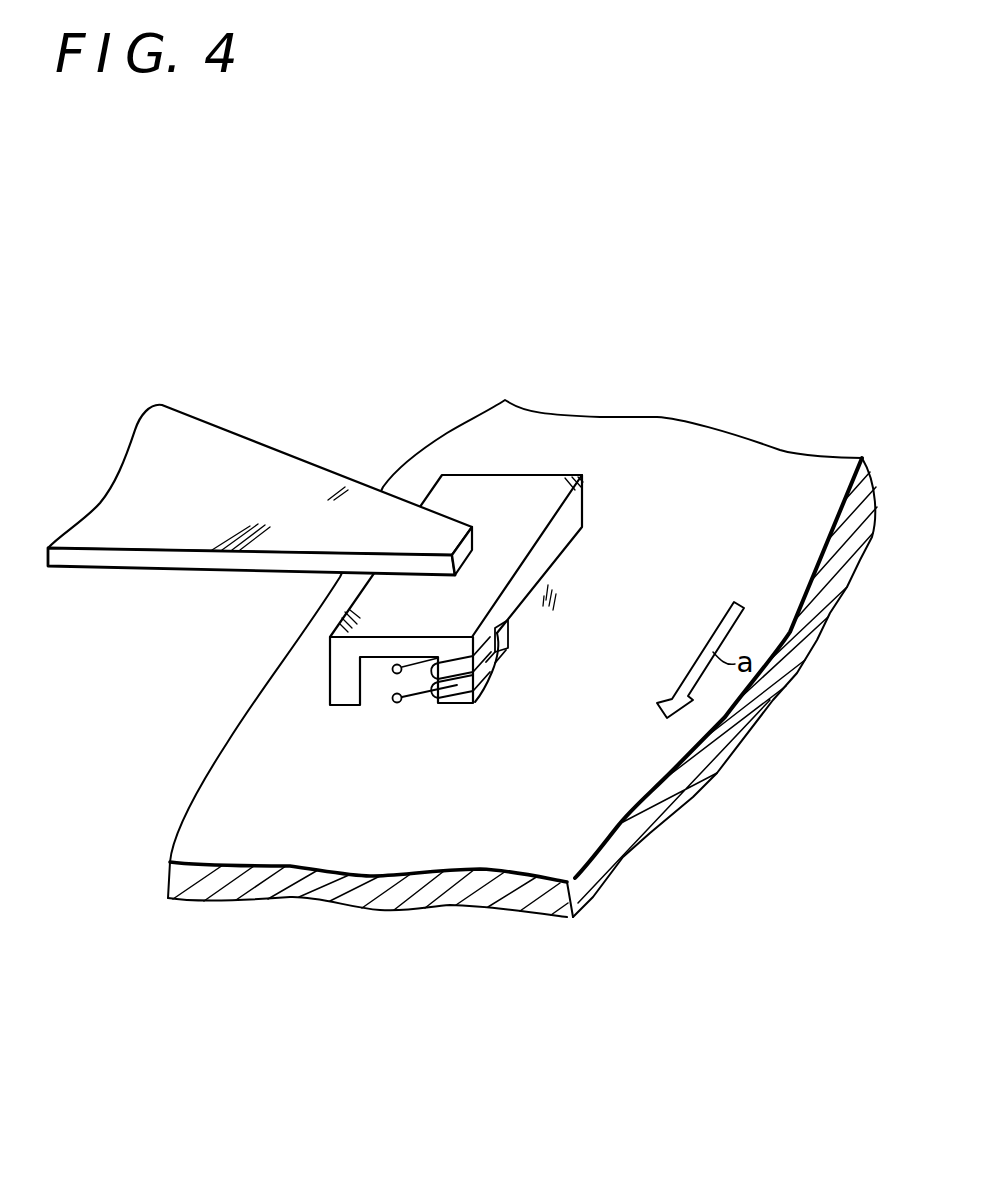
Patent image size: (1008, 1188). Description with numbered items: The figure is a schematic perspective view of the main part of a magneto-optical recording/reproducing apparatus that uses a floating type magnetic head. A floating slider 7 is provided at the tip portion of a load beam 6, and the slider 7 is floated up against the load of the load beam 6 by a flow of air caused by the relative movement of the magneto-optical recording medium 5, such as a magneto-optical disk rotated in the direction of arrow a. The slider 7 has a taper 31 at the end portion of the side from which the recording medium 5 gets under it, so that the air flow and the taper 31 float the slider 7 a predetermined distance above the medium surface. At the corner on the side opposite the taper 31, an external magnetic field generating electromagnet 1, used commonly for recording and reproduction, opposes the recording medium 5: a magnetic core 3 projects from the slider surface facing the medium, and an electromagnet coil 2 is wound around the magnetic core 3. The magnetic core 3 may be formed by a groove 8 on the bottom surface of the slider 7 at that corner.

The electromagnet 1 is at (447, 687).
The electromagnet coil 2 is at (462, 703).
The magnetic core 3 is at (447, 700).
The magneto-optical recording medium 5 is at (676, 435).
The load beam 6 is at (188, 427).
The floating slider 7 is at (483, 490).
The groove 8 is at (388, 689).
The taper 31 is at (580, 538).